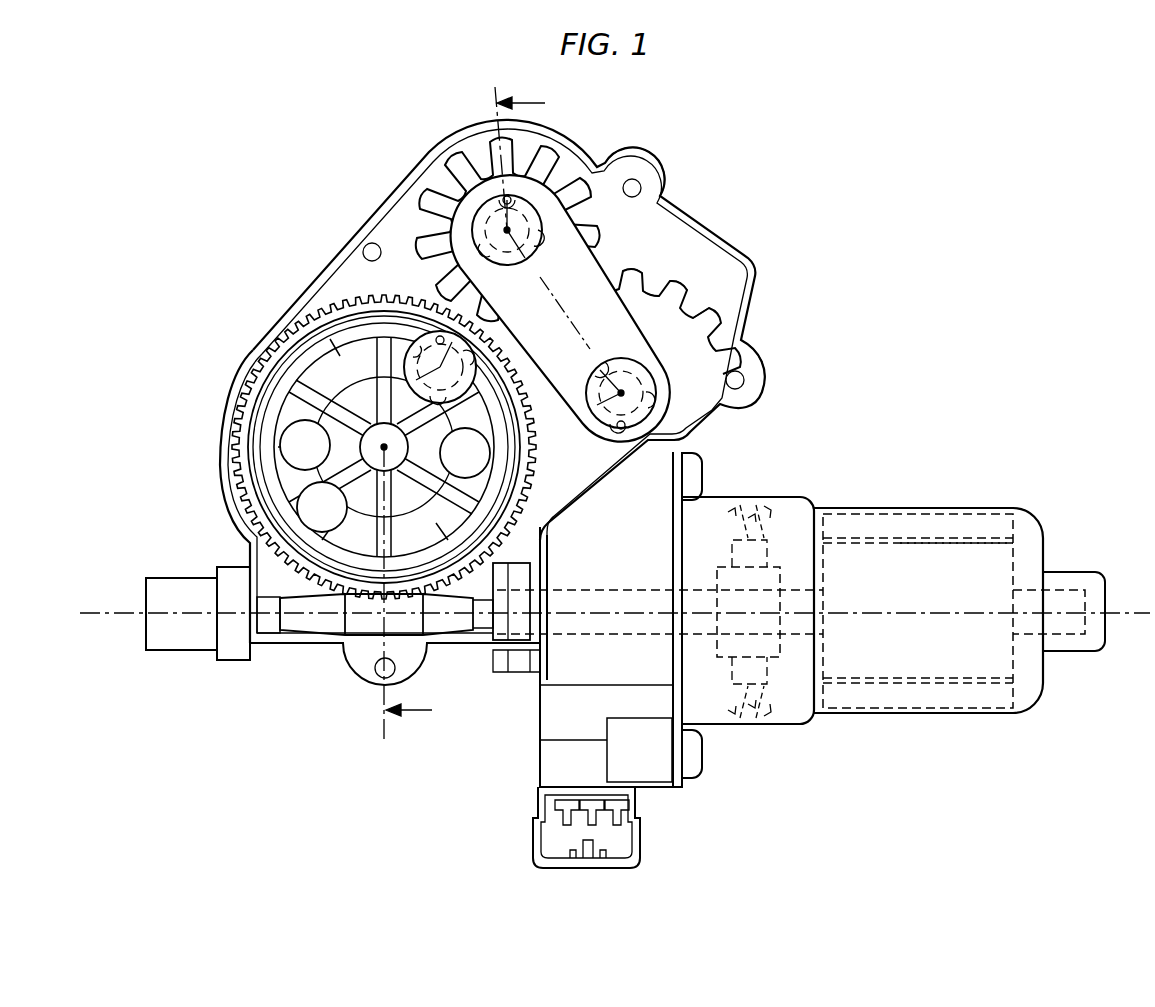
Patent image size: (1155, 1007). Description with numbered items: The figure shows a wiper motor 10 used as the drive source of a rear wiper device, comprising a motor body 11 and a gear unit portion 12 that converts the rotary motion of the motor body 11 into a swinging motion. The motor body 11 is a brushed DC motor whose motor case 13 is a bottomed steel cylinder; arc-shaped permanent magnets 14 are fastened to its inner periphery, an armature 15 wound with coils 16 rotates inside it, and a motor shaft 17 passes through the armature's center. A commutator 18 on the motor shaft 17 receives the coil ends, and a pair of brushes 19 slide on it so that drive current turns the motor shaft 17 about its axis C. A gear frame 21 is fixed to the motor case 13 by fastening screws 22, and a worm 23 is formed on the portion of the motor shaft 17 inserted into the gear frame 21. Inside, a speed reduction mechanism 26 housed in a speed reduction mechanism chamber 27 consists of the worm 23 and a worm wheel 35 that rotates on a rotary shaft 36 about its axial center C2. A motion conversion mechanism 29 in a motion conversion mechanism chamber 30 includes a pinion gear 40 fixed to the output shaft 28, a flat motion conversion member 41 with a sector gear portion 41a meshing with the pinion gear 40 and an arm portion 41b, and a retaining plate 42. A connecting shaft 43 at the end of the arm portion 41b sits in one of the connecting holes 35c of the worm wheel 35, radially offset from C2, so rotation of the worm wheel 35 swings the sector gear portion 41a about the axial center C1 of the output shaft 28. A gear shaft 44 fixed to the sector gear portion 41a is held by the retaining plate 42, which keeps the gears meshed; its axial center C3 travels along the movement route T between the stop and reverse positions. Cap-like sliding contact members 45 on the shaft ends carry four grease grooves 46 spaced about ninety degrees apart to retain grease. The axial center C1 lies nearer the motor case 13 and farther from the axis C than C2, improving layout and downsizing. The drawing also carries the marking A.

The wiper motor 10 is at (806, 185).
The motor body 11 is at (912, 488).
The gear unit portion 12 is at (262, 240).
The motor case 13 is at (1026, 545).
The permanent magnets 14 is at (882, 526).
The armature 15 is at (962, 694).
The coils 16 is at (800, 535).
The motor shaft 17 is at (1065, 636).
The commutator 18 is at (722, 716).
The brushes 19 is at (775, 560).
The gear frame 21 is at (292, 664).
The fastening screws 22 is at (705, 470).
The worm 23 is at (362, 620).
The speed reduction mechanism 26 is at (285, 572).
The speed reduction mechanism chamber 27 is at (290, 446).
The output shaft 28 is at (470, 222).
The motion conversion mechanism 29 is at (690, 289).
The motion conversion mechanism chamber 30 is at (640, 262).
The worm wheel 35 is at (228, 384).
The connecting holes 35c is at (296, 438).
The rotary shaft 36 is at (358, 460).
The pinion gear 40 is at (458, 172).
The motion conversion member 41 is at (740, 342).
The sector gear portion 41a is at (702, 318).
The arm portion 41b is at (700, 347).
The retaining plate 42 is at (625, 222).
The connecting shaft 43 is at (280, 318).
The gear shaft 44 is at (752, 366).
The sliding contact members 45 is at (468, 222).
The grease grooves 46 is at (470, 206).
The axial center of the output shaft C1 is at (542, 228).
The axial center of the worm wheel C2 is at (384, 447).
The axial center of the gear shaft C3 is at (660, 400).
The movement route T is at (556, 426).
The section line A is at (465, 411).
The axis of the motor shaft C is at (1134, 610).